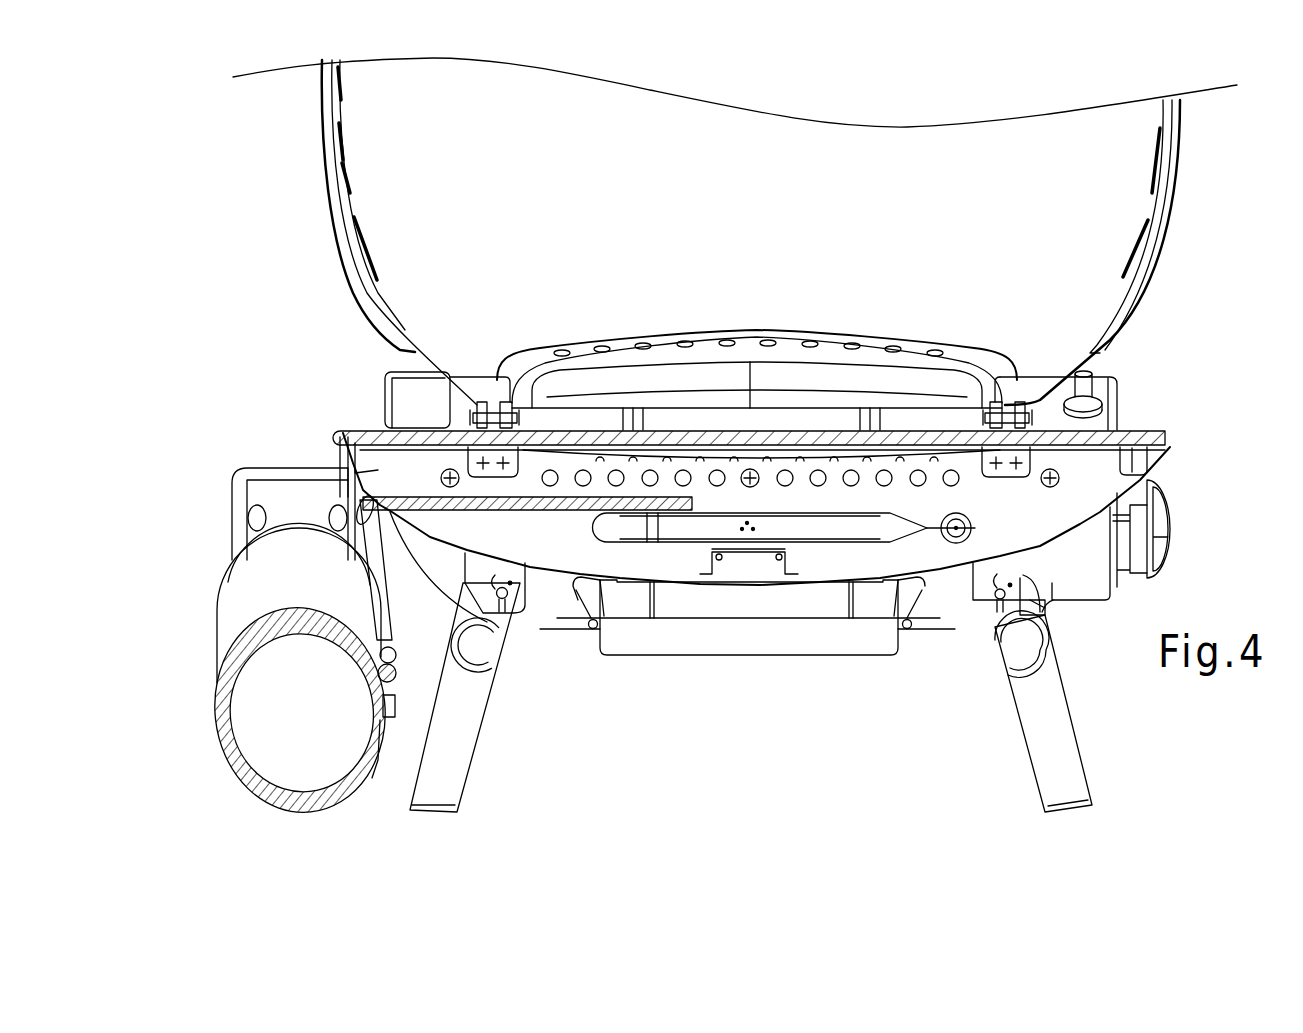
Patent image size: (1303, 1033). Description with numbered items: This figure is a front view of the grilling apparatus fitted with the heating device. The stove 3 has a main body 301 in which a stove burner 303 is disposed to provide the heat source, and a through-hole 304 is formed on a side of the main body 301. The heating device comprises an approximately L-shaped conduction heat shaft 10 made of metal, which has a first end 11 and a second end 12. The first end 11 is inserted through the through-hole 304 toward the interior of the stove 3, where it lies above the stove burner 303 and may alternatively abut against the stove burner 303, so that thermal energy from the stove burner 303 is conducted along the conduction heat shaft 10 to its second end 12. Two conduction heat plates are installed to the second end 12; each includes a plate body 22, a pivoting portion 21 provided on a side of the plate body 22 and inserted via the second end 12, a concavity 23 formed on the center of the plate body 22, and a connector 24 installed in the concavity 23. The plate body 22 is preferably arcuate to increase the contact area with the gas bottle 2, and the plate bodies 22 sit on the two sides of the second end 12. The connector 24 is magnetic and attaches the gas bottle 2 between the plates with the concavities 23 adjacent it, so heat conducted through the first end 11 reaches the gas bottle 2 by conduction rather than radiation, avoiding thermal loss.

The gas bottle 2 is at (255, 612).
The stove 3 is at (1163, 352).
The conduction heat shaft 10 is at (347, 489).
The first end 11 is at (655, 505).
The second end 12 is at (393, 682).
The pivoting portion 21 is at (390, 657).
The plate body 22 is at (352, 636).
The concavity 23 is at (377, 772).
The connector 24 is at (383, 755).
The main body 301 is at (1115, 460).
The stove burner 303 is at (823, 523).
The through-hole 304 is at (470, 595).